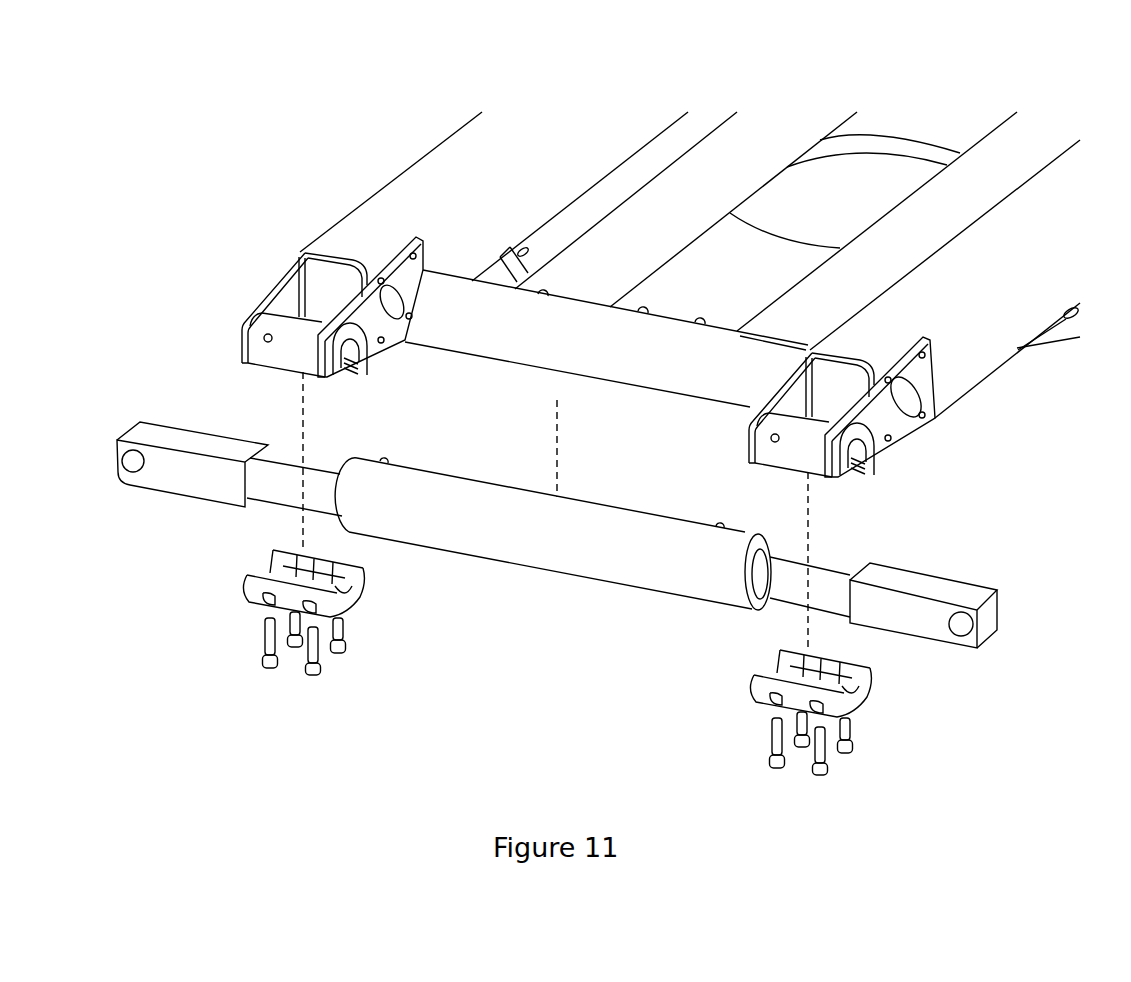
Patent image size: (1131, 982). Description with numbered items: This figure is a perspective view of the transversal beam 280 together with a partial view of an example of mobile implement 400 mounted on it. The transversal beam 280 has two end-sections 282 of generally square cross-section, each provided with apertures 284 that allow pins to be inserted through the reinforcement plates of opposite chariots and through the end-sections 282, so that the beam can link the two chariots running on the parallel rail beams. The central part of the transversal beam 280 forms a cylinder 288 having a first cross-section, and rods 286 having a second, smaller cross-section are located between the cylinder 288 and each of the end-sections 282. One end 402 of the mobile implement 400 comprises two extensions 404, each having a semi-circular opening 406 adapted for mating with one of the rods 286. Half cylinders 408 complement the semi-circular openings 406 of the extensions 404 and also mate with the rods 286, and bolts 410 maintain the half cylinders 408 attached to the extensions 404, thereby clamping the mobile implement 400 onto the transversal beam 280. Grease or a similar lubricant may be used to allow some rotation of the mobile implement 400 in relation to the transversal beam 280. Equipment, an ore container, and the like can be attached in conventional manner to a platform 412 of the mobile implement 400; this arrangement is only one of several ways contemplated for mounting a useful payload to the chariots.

The transversal beam 280 is at (90, 552).
The end-sections 282 is at (193, 443).
The apertures 284 is at (120, 442).
The rods 286 is at (327, 477).
The cylinder 288 is at (618, 530).
The mobile implement 400 is at (368, 185).
The end of the mobile implement 402 is at (240, 305).
The extensions 404 is at (268, 278).
The semi-circular openings 406 is at (348, 355).
The half cylinders 408 is at (357, 592).
The bolts 410 is at (347, 638).
The platform 412 is at (770, 282).